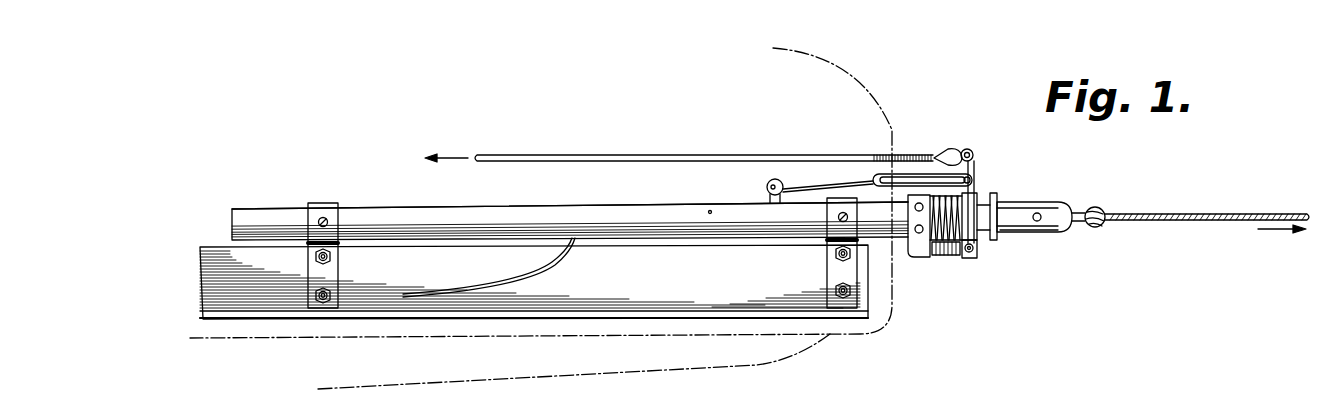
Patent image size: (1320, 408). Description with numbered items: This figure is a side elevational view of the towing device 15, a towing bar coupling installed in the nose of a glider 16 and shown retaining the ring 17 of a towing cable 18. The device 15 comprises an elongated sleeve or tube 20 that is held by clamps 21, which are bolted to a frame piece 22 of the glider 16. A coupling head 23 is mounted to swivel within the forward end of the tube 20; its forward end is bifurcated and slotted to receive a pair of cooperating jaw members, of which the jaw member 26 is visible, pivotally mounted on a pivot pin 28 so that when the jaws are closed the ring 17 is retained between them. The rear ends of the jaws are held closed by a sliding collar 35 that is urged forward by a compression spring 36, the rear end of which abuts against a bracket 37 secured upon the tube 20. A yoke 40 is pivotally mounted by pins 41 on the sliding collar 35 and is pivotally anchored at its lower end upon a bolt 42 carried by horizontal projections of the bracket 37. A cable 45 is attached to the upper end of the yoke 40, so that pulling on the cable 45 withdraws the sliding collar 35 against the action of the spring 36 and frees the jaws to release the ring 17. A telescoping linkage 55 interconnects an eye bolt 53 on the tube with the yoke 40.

The towing device 15 is at (481, 208).
The glider 16 is at (884, 103).
The ring 17 is at (1086, 210).
The towing cable 18 is at (1183, 214).
The elongated sleeve or tube 20 is at (645, 207).
The clamps 21 is at (325, 203).
The frame piece 22 is at (538, 297).
The coupling head 23 is at (1028, 204).
The jaw member 26 is at (1050, 233).
The pivot pin 28 is at (1044, 212).
The sliding collar 35 is at (997, 238).
The compression spring 36 is at (947, 244).
The bracket 37 is at (915, 250).
The yoke 40 is at (977, 161).
The pins 41 is at (972, 210).
The bolt 42 is at (975, 258).
The cable 45 is at (675, 155).
The eye bolt 53 is at (766, 183).
The telescoping linkage 55 is at (856, 181).